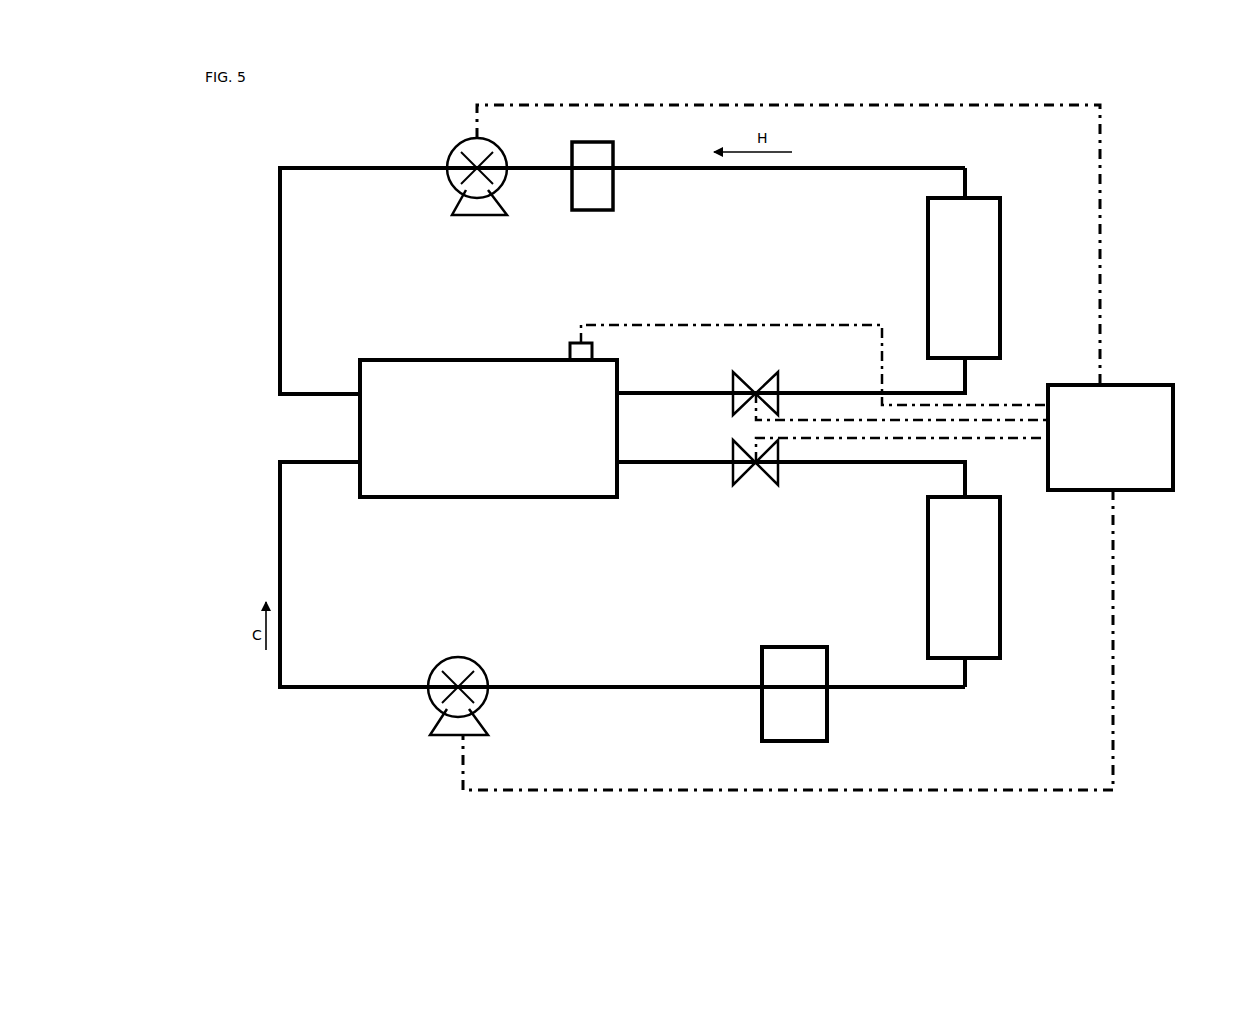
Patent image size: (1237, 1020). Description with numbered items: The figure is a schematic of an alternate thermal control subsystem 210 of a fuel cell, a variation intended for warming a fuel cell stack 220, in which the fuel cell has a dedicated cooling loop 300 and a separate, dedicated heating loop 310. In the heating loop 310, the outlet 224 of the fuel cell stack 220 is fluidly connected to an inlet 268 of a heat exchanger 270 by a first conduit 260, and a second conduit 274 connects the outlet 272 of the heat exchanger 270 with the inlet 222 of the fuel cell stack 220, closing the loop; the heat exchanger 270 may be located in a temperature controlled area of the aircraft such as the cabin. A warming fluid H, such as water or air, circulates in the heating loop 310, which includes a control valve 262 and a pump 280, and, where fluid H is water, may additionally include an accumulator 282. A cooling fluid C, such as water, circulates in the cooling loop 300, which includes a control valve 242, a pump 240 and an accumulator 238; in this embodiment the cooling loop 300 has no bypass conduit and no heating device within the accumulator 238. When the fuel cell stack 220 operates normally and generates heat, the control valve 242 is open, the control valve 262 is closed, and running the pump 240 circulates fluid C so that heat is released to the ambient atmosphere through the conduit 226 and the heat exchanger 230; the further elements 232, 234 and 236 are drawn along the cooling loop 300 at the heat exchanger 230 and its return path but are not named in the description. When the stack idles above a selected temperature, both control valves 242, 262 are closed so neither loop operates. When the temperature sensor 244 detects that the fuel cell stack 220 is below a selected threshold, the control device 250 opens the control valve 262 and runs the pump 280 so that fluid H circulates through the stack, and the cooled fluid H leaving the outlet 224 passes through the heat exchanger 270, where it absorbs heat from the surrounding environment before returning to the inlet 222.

The thermal control subsystem 210 is at (262, 388).
The fuel cell stack 220 is at (488, 428).
The inlet of the fuel cell stack 222 is at (358, 431).
The outlet of the fuel cell stack 224 is at (619, 423).
The conduit 226 is at (655, 462).
The heat exchanger 230 is at (964, 577).
The cold reservoir inlet 232 is at (975, 497).
The cold reservoir outlet 234 is at (978, 660).
The cold return line 236 is at (320, 685).
The accumulator 238 is at (794, 694).
The pump 240 is at (452, 732).
The control valve 242 is at (775, 480).
The temperature sensor 244 is at (570, 348).
The control device 250 is at (1110, 437).
The first conduit 260 is at (633, 392).
The control valve 262 is at (778, 392).
The inlet of the heat exchanger 268 is at (978, 358).
The heat exchanger 270 is at (964, 278).
The outlet of the heat exchanger 272 is at (982, 196).
The second conduit 274 is at (282, 207).
The pump 280 is at (485, 217).
The accumulator 282 is at (615, 182).
The cooling loop 300 is at (1052, 737).
The heating loop 310 is at (1075, 186).